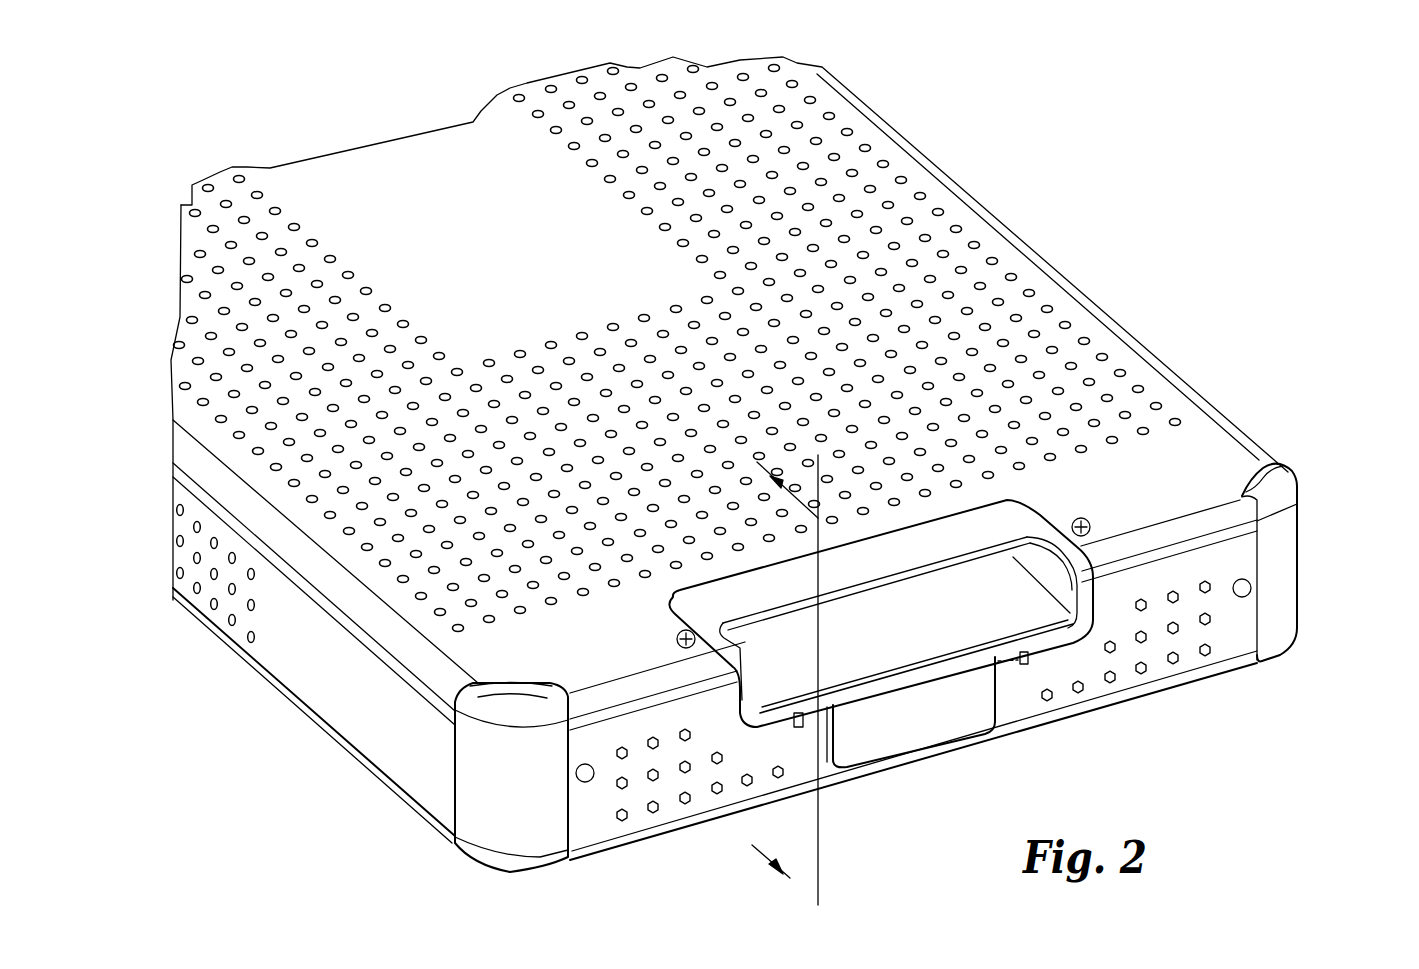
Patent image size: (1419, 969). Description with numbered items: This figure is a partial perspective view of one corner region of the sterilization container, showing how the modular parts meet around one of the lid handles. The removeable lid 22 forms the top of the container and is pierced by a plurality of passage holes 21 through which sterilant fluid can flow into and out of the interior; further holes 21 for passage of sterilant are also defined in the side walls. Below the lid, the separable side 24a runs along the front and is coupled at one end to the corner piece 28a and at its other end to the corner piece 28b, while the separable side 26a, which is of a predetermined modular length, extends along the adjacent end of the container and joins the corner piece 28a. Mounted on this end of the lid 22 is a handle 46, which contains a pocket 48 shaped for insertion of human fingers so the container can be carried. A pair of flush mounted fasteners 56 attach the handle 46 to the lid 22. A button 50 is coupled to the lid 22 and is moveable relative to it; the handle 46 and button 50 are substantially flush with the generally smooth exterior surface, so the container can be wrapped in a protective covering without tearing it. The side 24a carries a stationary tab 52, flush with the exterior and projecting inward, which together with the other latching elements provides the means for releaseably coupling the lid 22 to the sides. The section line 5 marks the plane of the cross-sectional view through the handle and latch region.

The section line 5- 5 is at (774, 669).
The passage holes 21 is at (975, 240).
The removeable lid 22 is at (413, 192).
The separable side 24a is at (1237, 625).
The separable side 26a is at (323, 665).
The corner piece 28a is at (510, 793).
The corner piece 28b is at (1293, 540).
The handle 46 is at (1007, 527).
The pocket 48 is at (985, 590).
The button 50 is at (897, 730).
The stationary tab 52 is at (1024, 664).
The flush mounted fastener 56 is at (1090, 516).